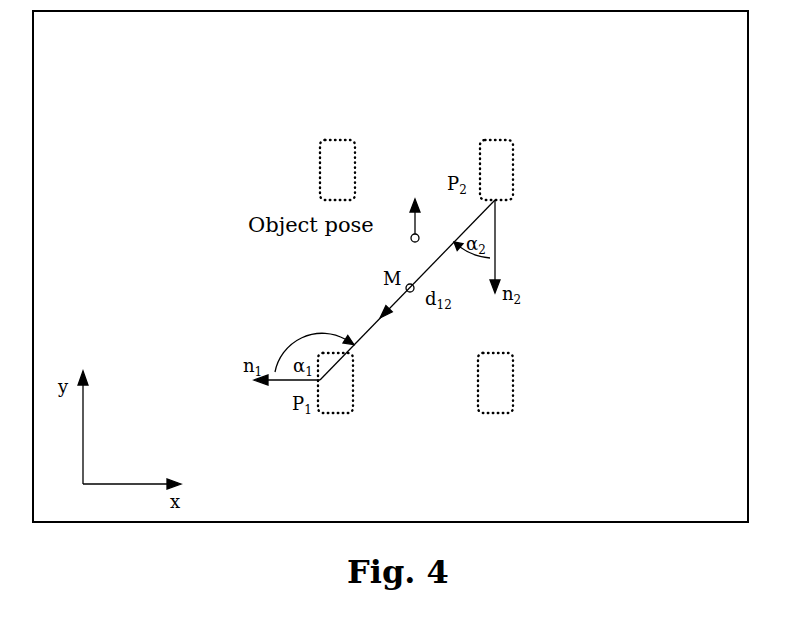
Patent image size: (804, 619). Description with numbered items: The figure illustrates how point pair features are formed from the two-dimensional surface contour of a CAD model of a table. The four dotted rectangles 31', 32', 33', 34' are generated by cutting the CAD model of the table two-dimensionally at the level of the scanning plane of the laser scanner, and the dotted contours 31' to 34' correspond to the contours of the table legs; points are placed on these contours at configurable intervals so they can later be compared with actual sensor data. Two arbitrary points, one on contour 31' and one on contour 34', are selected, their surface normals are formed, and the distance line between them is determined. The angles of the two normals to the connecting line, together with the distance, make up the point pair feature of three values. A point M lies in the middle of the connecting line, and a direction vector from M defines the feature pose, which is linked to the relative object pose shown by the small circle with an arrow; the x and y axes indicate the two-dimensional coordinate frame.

The dotted contour 31' is at (376, 385).
The dotted contour 32' is at (544, 385).
The dotted contour 33' is at (383, 150).
The dotted contour 34' is at (533, 150).